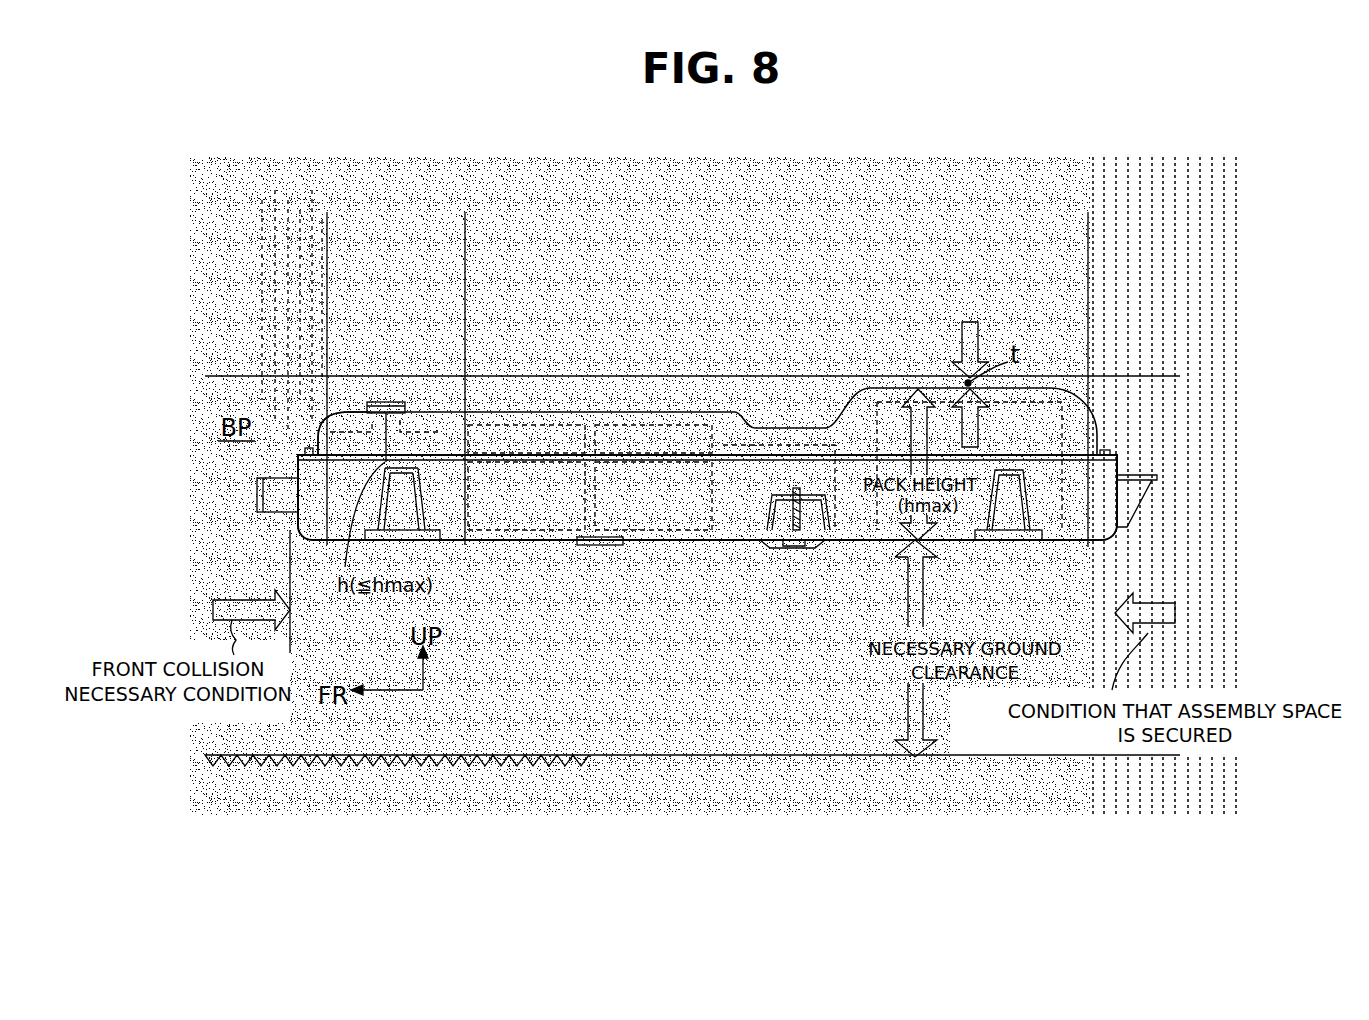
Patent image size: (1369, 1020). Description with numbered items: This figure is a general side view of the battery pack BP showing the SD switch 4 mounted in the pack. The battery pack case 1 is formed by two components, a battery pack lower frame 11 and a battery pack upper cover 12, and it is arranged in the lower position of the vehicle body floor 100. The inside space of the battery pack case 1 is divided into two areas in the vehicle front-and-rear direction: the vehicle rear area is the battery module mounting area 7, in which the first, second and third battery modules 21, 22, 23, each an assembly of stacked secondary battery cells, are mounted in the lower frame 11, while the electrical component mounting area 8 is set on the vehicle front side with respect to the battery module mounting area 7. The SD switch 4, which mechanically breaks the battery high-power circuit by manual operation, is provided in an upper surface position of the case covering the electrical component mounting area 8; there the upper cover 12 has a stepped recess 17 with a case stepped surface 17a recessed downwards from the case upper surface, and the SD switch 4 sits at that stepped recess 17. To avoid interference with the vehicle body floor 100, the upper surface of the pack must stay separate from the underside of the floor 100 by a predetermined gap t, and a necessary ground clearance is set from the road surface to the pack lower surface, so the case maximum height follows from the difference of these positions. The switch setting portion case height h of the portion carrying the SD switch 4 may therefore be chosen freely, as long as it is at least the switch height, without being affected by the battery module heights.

The battery pack case 1 is at (882, 618).
The SD switch 4 is at (379, 398).
The battery module mounting area 7 is at (1084, 232).
The electrical component mounting area 8 is at (331, 232).
The battery pack lower frame 11 is at (848, 542).
The battery pack upper cover 12 is at (857, 433).
The stepped recess 17 is at (439, 418).
The case stepped surface 17a is at (345, 410).
The first battery module 21 is at (1050, 548).
The second battery module 22 is at (650, 542).
The third battery module 23 is at (725, 545).
The vehicle body floor 100 is at (634, 376).